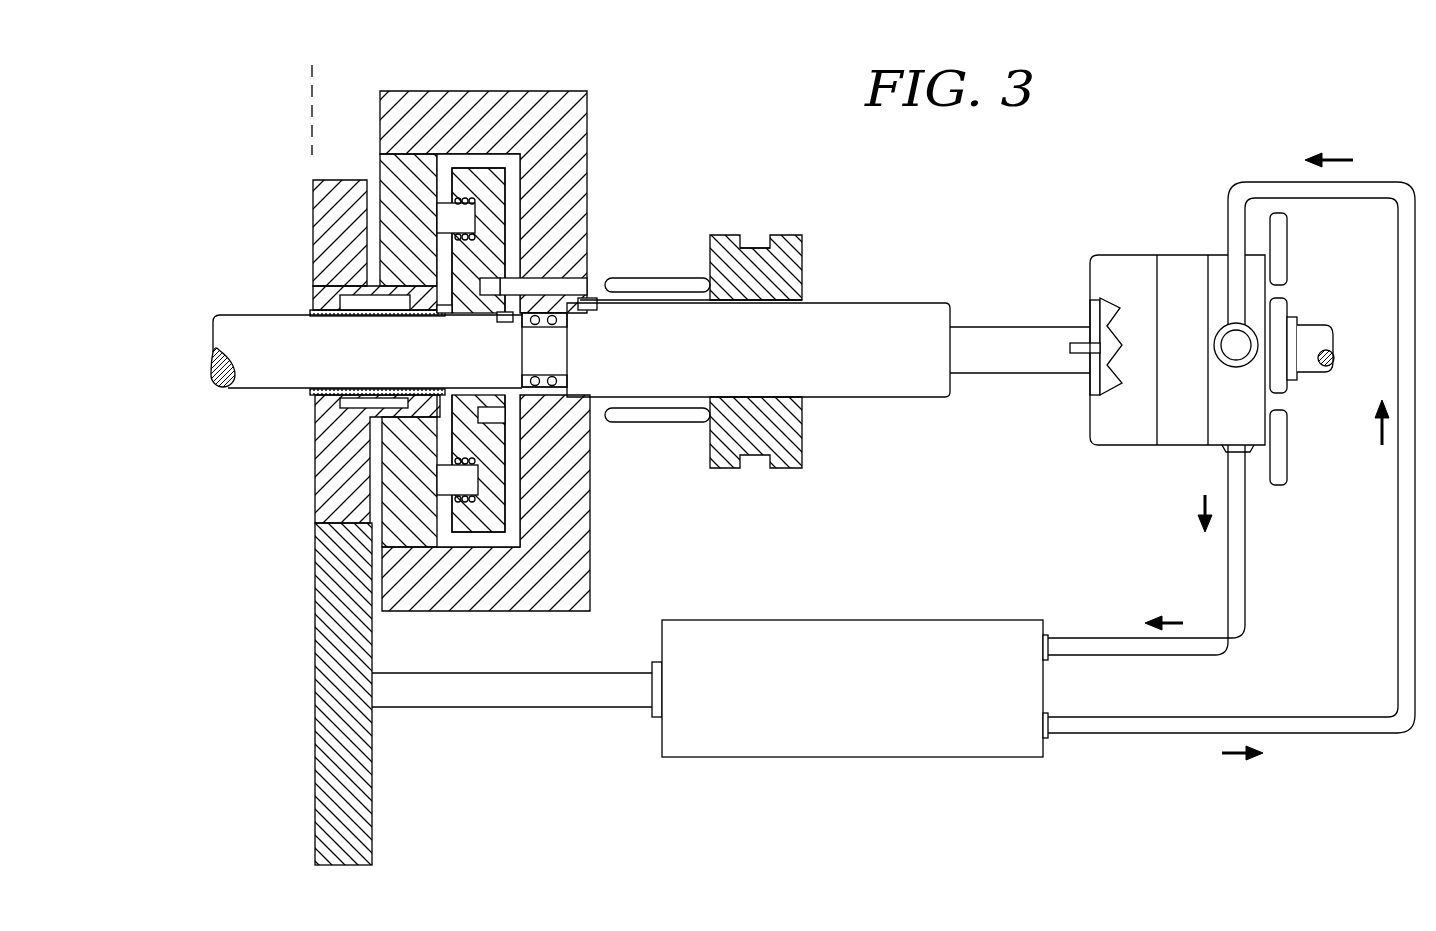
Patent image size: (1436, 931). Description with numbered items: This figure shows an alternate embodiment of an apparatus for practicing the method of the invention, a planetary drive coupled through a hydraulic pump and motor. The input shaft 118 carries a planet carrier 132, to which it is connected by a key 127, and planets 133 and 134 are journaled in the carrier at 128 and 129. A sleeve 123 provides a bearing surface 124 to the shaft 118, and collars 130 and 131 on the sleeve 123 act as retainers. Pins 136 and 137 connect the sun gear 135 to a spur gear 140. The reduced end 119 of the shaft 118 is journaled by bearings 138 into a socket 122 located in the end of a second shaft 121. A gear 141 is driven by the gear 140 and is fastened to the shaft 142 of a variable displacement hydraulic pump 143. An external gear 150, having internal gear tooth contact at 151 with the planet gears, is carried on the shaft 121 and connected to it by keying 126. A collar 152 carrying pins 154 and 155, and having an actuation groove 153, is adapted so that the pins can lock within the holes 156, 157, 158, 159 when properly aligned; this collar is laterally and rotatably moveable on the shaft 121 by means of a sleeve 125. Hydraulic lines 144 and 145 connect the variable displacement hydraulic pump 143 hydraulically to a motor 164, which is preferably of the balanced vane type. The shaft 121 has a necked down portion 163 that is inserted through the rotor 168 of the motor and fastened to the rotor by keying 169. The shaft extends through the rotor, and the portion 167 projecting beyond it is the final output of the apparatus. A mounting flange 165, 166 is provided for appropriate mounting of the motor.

The shaft 118 is at (230, 328).
The reduced end 119 is at (567, 352).
The shaft 121 is at (885, 320).
The socket 122 is at (567, 318).
The sleeve 123 is at (330, 316).
The bearing surface 124 is at (315, 418).
The sleeve 125 is at (805, 298).
The keying 126 is at (598, 304).
The key 127 is at (500, 322).
The journal 128 is at (480, 192).
The journal 129 is at (467, 500).
The collar 130 is at (445, 315).
The collar 131 is at (312, 391).
The planet carrier 132 is at (520, 205).
The planet 133 is at (400, 165).
The planet 134 is at (402, 497).
The sun gear 135 is at (345, 295).
The pin 136 is at (343, 402).
The pin 137 is at (352, 298).
The bearings 138 is at (598, 403).
The spur gear 140 is at (340, 485).
The gear 141 is at (330, 608).
The shaft 142 is at (578, 695).
The variable displacement hydraulic pump 143 is at (985, 740).
The hydraulic line 144 is at (1088, 647).
The hydraulic line 145 is at (1140, 727).
The external gear 150 is at (565, 556).
The internal gear tooth contact 151 is at (430, 152).
The collar 152 is at (790, 248).
The actuation groove 153 is at (751, 222).
The pin 154 is at (683, 412).
The pin 155 is at (685, 283).
The hole 156 is at (585, 397).
The hole 157 is at (490, 412).
The hole 158 is at (505, 286).
The hole 159 is at (560, 280).
The necked down portion 163 is at (975, 345).
The motor 164 is at (1147, 277).
The mounting flange 165 is at (1288, 222).
The mounting flange 166 is at (1288, 478).
The output portion 167 is at (1310, 340).
The rotor 168 is at (1092, 318).
The keying 169 is at (1082, 355).